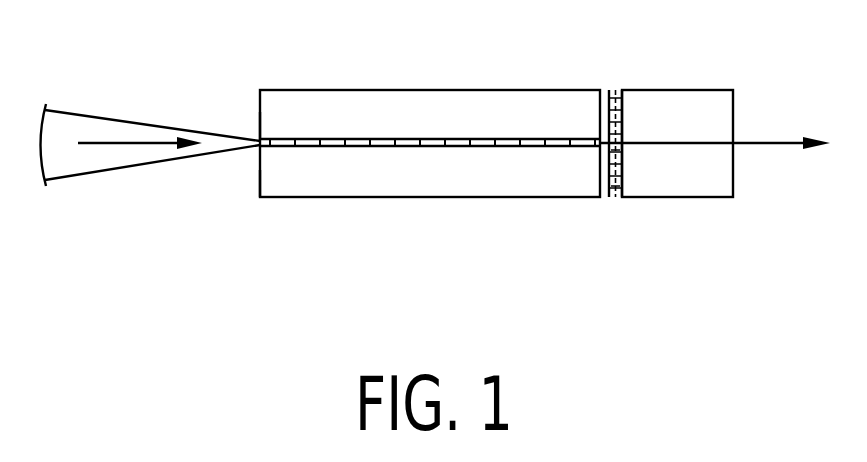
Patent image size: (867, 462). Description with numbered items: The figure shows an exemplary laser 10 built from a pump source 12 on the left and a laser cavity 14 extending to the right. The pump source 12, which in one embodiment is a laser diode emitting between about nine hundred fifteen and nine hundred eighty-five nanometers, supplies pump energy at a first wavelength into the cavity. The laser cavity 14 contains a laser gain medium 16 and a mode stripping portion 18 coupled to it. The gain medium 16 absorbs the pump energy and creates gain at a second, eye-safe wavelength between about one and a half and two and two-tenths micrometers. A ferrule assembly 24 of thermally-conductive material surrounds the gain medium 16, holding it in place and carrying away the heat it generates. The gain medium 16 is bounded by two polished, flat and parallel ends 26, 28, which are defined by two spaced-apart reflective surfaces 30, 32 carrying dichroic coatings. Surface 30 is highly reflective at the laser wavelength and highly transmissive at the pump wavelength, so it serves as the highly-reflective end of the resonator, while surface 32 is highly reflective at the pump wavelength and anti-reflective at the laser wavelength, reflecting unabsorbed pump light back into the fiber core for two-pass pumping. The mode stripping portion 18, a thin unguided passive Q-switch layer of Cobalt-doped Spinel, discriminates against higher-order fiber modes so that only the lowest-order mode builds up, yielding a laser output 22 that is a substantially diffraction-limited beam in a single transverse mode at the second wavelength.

The laser 10 is at (187, 223).
The pump source 12 is at (98, 115).
The laser cavity 14 is at (495, 215).
The laser gain medium 16 is at (405, 136).
The mode stripping portion 18 is at (613, 192).
The laser output 22 is at (783, 142).
The ferrule assembly 24 is at (317, 98).
The end of laser gain medium 26 is at (260, 197).
The end of laser gain medium 28 is at (606, 186).
The reflective surface 30 is at (260, 120).
The reflective surface 32 is at (611, 185).